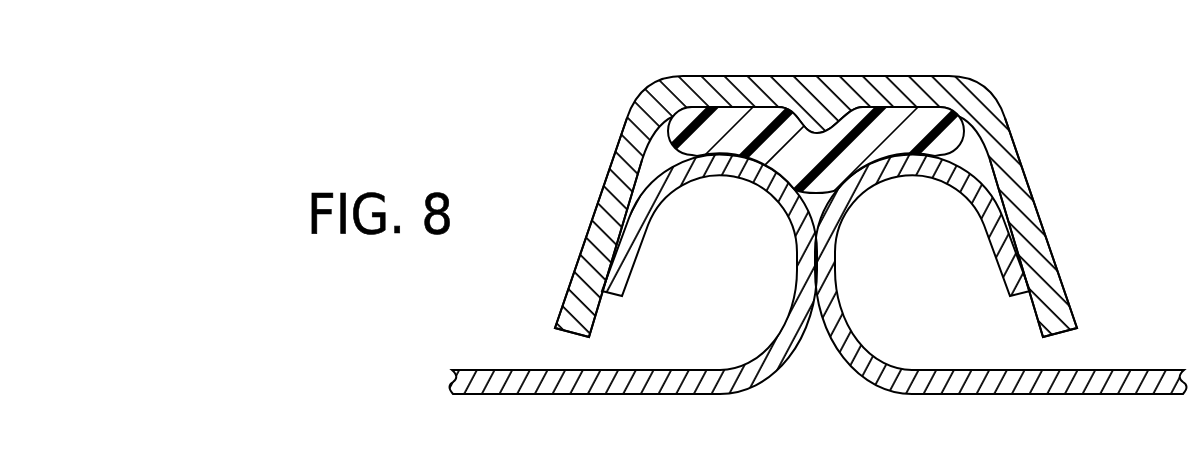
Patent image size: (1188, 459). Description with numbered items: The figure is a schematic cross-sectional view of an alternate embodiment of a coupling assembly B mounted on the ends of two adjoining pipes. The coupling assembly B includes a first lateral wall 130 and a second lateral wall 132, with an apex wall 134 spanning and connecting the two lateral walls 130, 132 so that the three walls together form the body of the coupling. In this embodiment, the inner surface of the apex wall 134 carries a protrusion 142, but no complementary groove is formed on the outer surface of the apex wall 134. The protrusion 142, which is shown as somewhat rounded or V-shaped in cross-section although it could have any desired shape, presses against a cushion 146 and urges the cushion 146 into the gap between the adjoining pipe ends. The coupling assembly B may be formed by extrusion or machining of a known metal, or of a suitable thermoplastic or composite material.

The first lateral wall 130 is at (607, 193).
The second lateral wall 132 is at (1026, 196).
The apex wall 134 is at (734, 88).
The protrusion 142 is at (828, 124).
The cushion 146 is at (952, 138).
The coupling assembly B is at (968, 70).